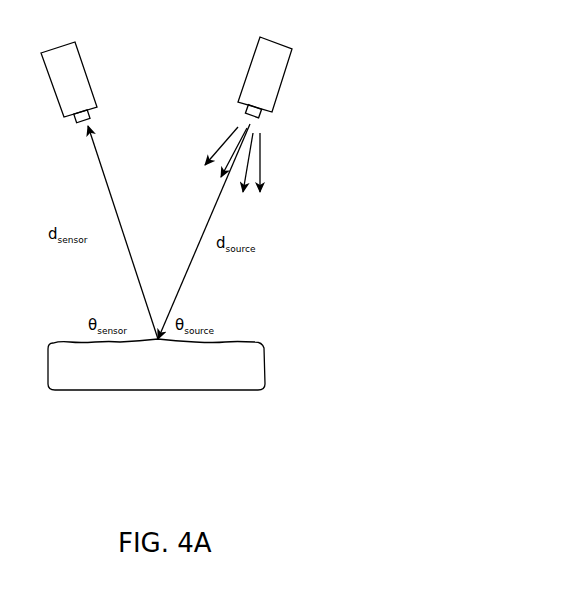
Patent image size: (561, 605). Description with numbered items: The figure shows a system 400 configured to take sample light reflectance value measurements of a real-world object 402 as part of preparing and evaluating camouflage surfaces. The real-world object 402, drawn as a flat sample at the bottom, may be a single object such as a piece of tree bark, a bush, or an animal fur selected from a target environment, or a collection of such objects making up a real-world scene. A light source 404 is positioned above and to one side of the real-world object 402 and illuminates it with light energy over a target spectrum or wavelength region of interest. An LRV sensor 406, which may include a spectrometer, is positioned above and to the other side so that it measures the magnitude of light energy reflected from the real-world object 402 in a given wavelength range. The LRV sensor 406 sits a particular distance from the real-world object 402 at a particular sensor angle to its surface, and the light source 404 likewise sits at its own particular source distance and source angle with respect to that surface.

The system 400 is at (466, 141).
The real-world object 402 is at (247, 363).
The light source 404 is at (275, 83).
The LRV sensor 406 is at (70, 62).